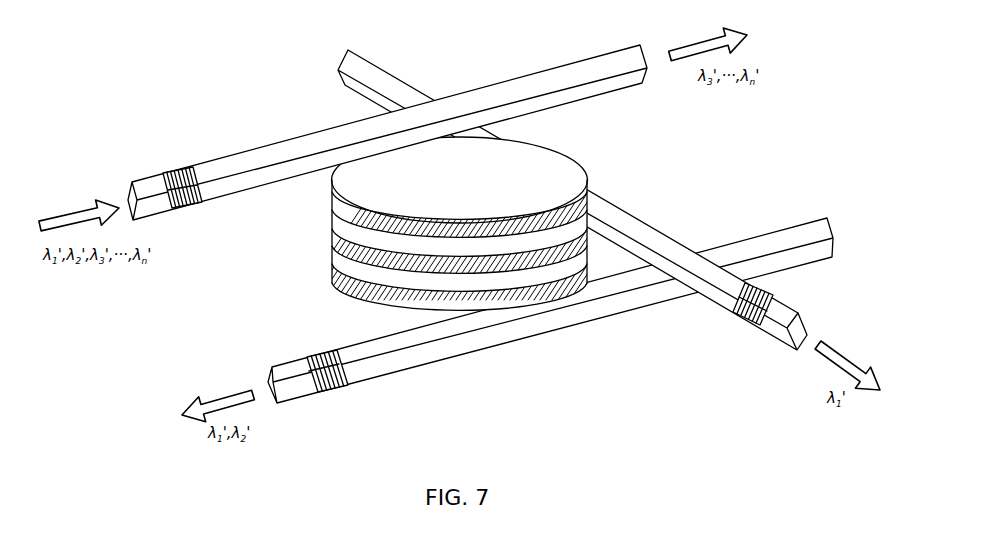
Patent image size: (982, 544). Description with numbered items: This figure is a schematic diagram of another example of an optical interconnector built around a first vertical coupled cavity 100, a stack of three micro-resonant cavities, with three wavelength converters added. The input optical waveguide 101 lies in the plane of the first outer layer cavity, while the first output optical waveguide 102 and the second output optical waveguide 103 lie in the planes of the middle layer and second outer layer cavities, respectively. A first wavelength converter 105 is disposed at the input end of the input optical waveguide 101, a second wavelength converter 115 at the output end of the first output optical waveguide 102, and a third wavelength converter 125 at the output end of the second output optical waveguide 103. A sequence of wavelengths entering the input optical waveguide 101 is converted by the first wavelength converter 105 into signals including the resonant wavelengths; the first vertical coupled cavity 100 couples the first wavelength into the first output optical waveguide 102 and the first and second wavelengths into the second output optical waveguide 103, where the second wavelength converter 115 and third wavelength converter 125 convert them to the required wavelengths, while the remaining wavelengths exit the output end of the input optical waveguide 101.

The first vertical coupled cavity 100 is at (557, 175).
The input optical waveguide 101 is at (500, 78).
The first output optical waveguide 102 is at (813, 316).
The second output optical waveguide 103 is at (780, 223).
The first wavelength converter 105 is at (192, 206).
The second wavelength converter 115 is at (773, 294).
The third wavelength converter 125 is at (348, 383).